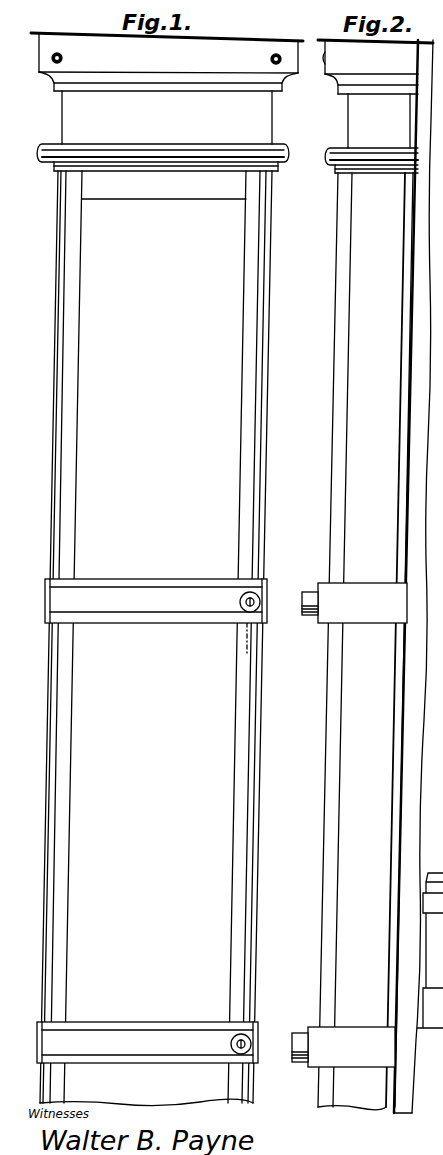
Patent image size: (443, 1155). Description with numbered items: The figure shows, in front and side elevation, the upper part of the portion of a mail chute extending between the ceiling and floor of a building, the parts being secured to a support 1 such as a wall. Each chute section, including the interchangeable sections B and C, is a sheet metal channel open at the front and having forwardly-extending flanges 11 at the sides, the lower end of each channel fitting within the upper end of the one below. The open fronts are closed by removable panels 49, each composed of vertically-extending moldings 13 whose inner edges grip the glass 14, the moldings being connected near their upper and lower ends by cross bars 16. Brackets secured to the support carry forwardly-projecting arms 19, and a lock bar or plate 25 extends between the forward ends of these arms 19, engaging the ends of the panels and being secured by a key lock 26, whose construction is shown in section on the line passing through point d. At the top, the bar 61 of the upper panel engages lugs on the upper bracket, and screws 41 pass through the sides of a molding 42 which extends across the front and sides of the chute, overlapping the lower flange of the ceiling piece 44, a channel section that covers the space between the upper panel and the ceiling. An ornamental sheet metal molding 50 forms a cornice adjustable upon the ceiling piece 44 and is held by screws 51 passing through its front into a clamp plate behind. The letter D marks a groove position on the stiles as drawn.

In FIG. 2, the support 1 is at (413, 576).
In FIG. 2, the forwardly-extending flanges 11 is at (365, 641).
In FIG. 1, the vertically-extending moldings 13 is at (262, 266).
In FIG. 1, the glass 14 is at (178, 258).
In FIG. 1, the cross bars 16 is at (138, 585).
In FIG. 1, the forwardly-projecting arms 19 is at (44, 592).
In FIG. 2, the forwardly-projecting arms 19 is at (357, 825).
In FIG. 1, the lock bar or plate 25 is at (137, 824).
In FIG. 1, the key lock 26 is at (240, 602).
In FIG. 2, the key lock 26 is at (305, 614).
In FIG. 1, the screws 41 is at (41, 150).
In FIG. 2, the screws 41 is at (390, 148).
In FIG. 1, the molding 42 is at (151, 161).
In FIG. 2, the molding 42 is at (384, 167).
In FIG. 1, the ceiling piece 44 is at (167, 117).
In FIG. 2, the ceiling piece 44 is at (379, 121).
In FIG. 1, the removable front portions or panels 49 is at (213, 327).
In FIG. 2, the removable front portions or panels 49 is at (343, 345).
In FIG. 1, the ornamental sheet metal molding 50 is at (167, 62).
In FIG. 2, the ornamental sheet metal molding 50 is at (375, 67).
In FIG. 1, the screws 51 is at (53, 64).
In FIG. 1, the bar of the upper panel 61 is at (164, 188).
In FIG. 1, the groove D is at (265, 418).
In FIG. 2, the groove D is at (360, 504).
In FIG. 1, the chute section C is at (248, 562).
In FIG. 2, the chute section C is at (357, 743).
In FIG. 1, the section line d is at (246, 649).
In FIG. 1, the chute section B is at (255, 1072).
In FIG. 2, the chute section B is at (311, 1090).